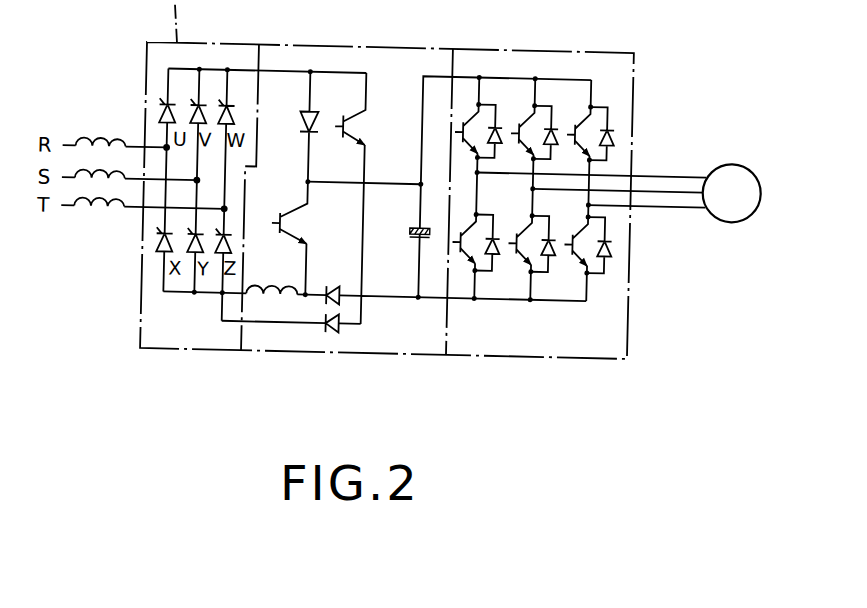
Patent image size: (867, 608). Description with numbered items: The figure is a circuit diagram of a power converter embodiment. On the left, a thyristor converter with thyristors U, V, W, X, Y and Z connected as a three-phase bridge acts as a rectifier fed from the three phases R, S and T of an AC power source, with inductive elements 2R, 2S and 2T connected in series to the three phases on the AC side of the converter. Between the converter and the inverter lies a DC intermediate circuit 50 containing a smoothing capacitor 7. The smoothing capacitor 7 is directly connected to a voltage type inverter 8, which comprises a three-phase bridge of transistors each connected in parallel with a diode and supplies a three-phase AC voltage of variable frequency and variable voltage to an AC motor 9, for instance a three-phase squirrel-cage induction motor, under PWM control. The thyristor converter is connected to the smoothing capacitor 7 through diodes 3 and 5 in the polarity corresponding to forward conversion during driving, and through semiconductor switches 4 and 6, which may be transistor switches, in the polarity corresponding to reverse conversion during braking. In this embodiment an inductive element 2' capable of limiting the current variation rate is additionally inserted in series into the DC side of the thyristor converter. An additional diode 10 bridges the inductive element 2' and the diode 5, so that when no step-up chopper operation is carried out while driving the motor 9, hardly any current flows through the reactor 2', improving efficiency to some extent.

The inductive element 2R is at (96, 138).
The inductive element 2S is at (87, 186).
The inductive element 2T is at (108, 210).
The inductive element 2' is at (272, 269).
The diode 3 is at (301, 129).
The semiconductor switch 4 is at (290, 208).
The diode 5 is at (328, 284).
The semiconductor switch 6 is at (364, 122).
The smoothing capacitor 7 is at (410, 228).
The voltage type inverter 8 is at (561, 41).
The AC motor 9 is at (731, 150).
The additional diode 10 is at (340, 329).
The DC intermediate circuit 50 is at (386, 220).